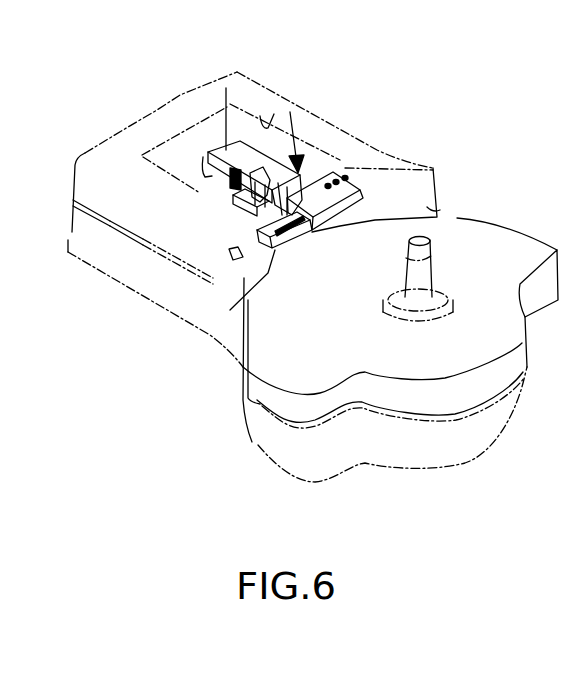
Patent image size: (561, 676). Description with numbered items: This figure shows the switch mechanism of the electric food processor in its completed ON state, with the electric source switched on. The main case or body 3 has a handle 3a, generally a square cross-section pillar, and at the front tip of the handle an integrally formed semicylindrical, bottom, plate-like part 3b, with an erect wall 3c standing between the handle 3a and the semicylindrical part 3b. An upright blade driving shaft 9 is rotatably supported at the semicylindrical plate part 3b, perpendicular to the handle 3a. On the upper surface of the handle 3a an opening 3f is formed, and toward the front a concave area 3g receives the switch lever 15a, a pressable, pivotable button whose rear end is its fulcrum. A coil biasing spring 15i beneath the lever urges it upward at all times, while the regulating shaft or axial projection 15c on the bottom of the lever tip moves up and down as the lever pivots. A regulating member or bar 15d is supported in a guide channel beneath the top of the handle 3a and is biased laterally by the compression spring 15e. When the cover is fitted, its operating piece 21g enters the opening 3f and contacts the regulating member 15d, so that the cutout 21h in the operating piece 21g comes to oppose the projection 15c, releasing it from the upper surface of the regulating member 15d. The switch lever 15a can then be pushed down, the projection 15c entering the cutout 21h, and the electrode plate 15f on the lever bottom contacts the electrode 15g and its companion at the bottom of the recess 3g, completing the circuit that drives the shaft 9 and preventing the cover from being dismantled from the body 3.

The main case or body 3 is at (168, 307).
The handle 3a is at (120, 248).
The semicylindrical bottom plate like part 3b is at (268, 426).
The erect wall 3c is at (466, 204).
The opening 3f is at (213, 279).
The concave area 3g is at (273, 113).
The blade driving shaft 9 is at (422, 287).
The switch lever 15a is at (224, 87).
The regulating shaft (axial projection) 15c is at (297, 240).
The regulating member or bar 15d is at (336, 218).
The compression spring 15e is at (352, 183).
The electrode plate 15f is at (236, 196).
The electrode 15g is at (229, 249).
The coil biasing spring 15i is at (206, 165).
The operating piece 21g is at (247, 333).
The cutout 21h is at (273, 268).